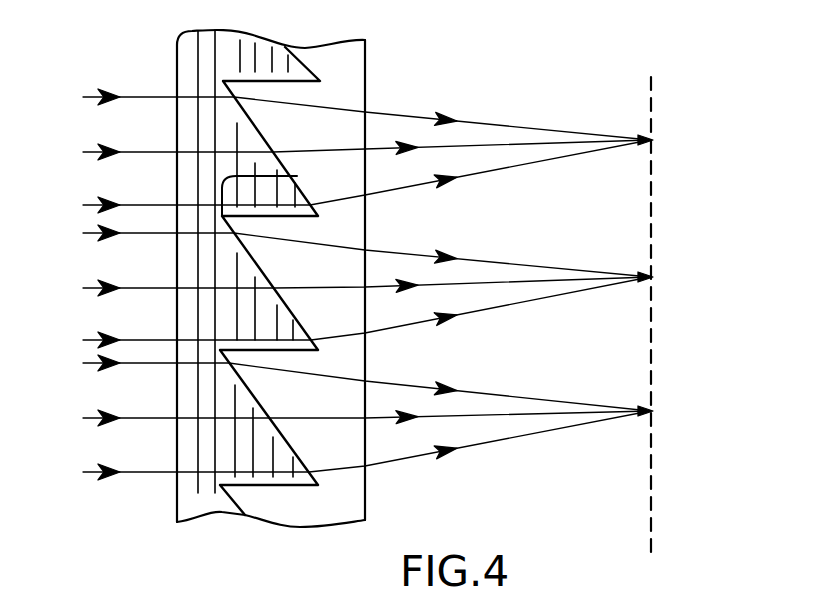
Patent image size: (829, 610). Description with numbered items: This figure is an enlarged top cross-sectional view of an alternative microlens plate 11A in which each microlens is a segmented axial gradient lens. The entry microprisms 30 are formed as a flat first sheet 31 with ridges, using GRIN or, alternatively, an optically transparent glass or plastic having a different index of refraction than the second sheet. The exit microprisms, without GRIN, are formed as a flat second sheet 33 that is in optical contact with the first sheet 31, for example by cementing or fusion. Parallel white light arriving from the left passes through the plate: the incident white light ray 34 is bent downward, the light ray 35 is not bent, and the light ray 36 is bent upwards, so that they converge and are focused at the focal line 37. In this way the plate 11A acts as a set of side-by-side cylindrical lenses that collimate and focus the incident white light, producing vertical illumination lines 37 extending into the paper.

The microlens plate 11A is at (318, 299).
The entry microprisms 30 is at (192, 165).
The first sheet 31 is at (367, 127).
The second sheet 33 is at (307, 520).
The incident white light ray 34 is at (122, 97).
The light ray 35 is at (133, 151).
The light ray 36 is at (120, 208).
The focal line 37 is at (655, 140).